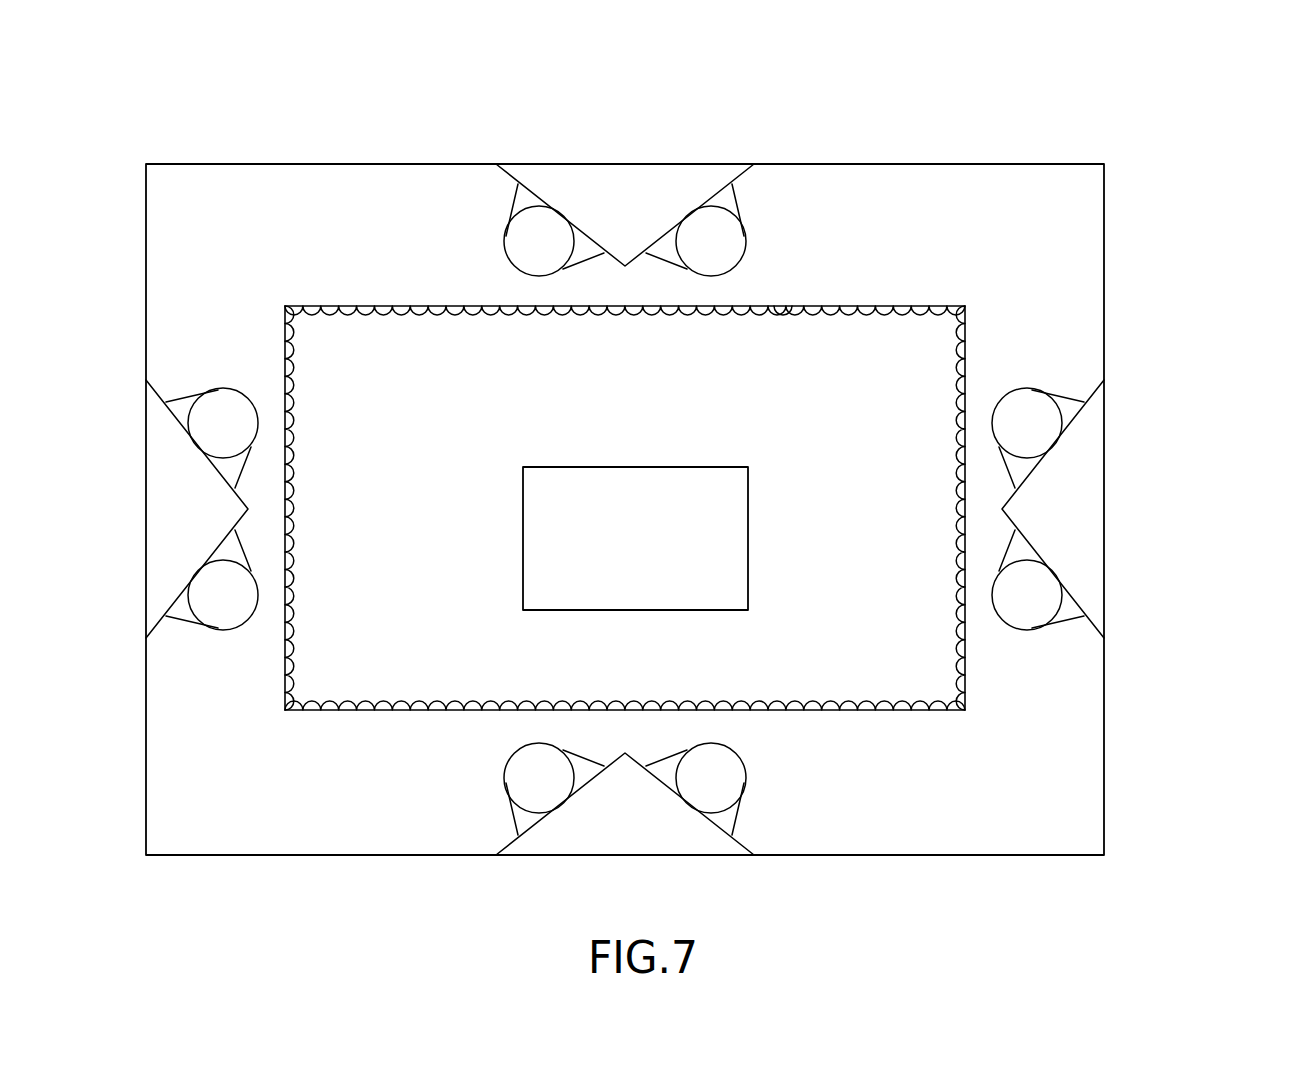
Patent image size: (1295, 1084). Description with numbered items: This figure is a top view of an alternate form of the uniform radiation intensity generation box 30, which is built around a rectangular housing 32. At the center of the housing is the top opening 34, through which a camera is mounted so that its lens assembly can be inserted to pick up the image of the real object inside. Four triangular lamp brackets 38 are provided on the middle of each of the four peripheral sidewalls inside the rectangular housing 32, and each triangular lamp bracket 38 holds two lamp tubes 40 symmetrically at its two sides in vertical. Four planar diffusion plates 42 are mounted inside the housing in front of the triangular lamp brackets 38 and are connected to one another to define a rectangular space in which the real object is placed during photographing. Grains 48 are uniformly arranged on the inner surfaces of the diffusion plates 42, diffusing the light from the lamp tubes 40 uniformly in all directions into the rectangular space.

The uniform radiation intensity generation box 30 is at (1186, 175).
The rectangular housing 32 is at (1105, 305).
The top opening 34 is at (713, 502).
The triangular lamp bracket 38 is at (1080, 500).
The lamp tube 40 is at (1026, 415).
The diffusion plate 42 is at (886, 305).
The grains 48 is at (783, 312).